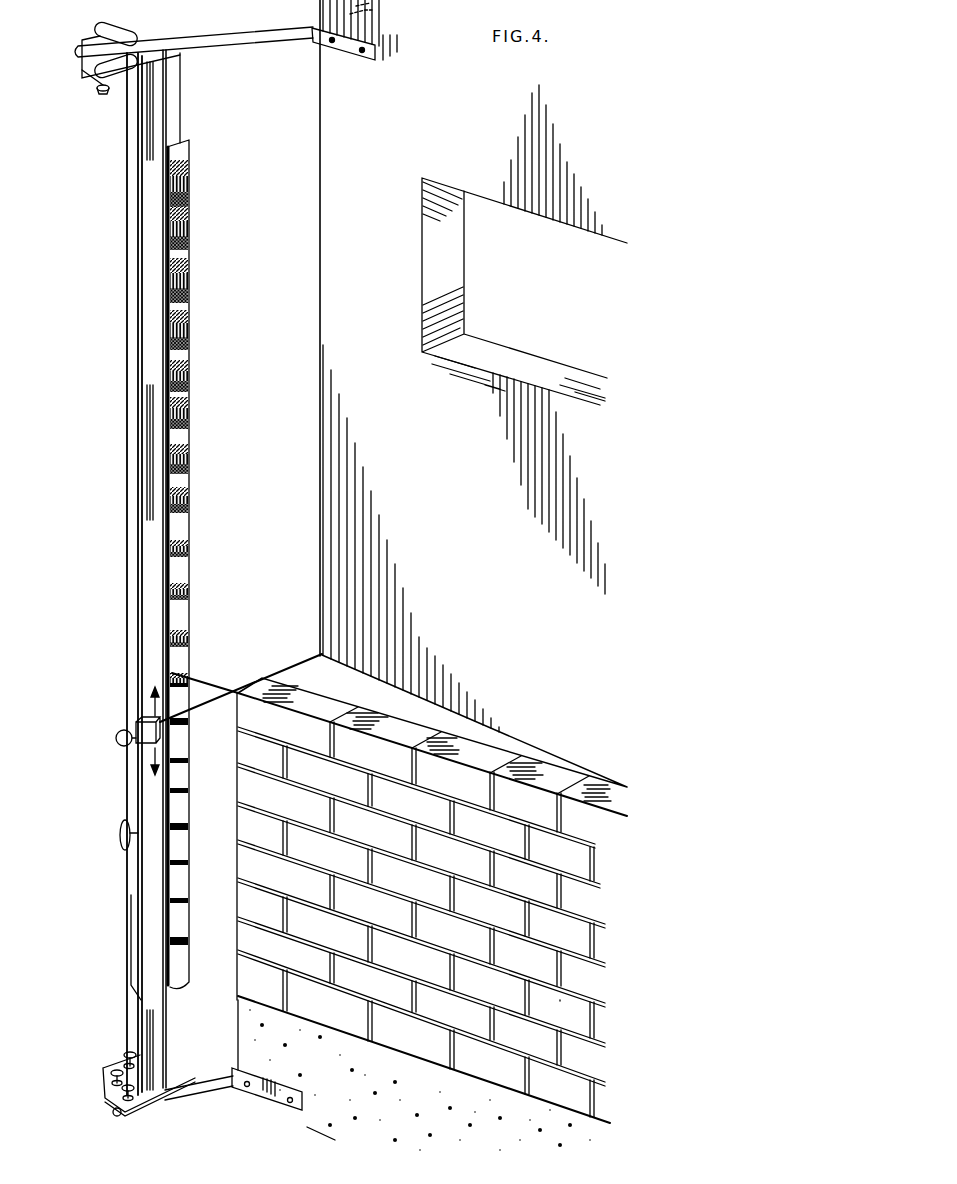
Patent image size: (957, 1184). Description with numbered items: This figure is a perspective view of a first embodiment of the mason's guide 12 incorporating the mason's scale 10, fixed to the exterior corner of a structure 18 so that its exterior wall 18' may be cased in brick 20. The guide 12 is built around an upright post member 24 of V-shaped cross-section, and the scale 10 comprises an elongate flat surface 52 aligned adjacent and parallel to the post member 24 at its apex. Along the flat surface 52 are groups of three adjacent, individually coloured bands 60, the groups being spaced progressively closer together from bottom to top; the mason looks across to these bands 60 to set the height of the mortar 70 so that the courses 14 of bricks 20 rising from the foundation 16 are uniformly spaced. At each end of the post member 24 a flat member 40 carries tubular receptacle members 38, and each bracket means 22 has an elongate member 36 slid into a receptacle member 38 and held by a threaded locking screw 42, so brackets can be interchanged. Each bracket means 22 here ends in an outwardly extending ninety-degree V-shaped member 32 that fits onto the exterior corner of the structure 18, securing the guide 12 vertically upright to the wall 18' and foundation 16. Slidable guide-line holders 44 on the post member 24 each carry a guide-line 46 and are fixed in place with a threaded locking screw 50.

The mason's scale 10 is at (186, 140).
The mason's guide 12 is at (78, 39).
The course 14 is at (556, 862).
The foundation 16 is at (389, 1122).
The structure 18 is at (342, 347).
The exterior wall 18' is at (387, 554).
The brick 20 is at (292, 809).
The bracket means 22 is at (313, 28).
The post member 24 is at (138, 284).
The V-shaped member 32 is at (345, 47).
The elongate member 36 is at (212, 35).
The receptacle member 38 is at (120, 29).
The flat member 40 is at (103, 1072).
The locking screw 42 is at (102, 92).
The guide-line holder 44 is at (148, 744).
The guide-line 46 is at (240, 690).
The locking screw 50 is at (116, 737).
The flat surface 52 is at (190, 148).
The coloured band 60 is at (189, 311).
The mortar 70 is at (590, 846).